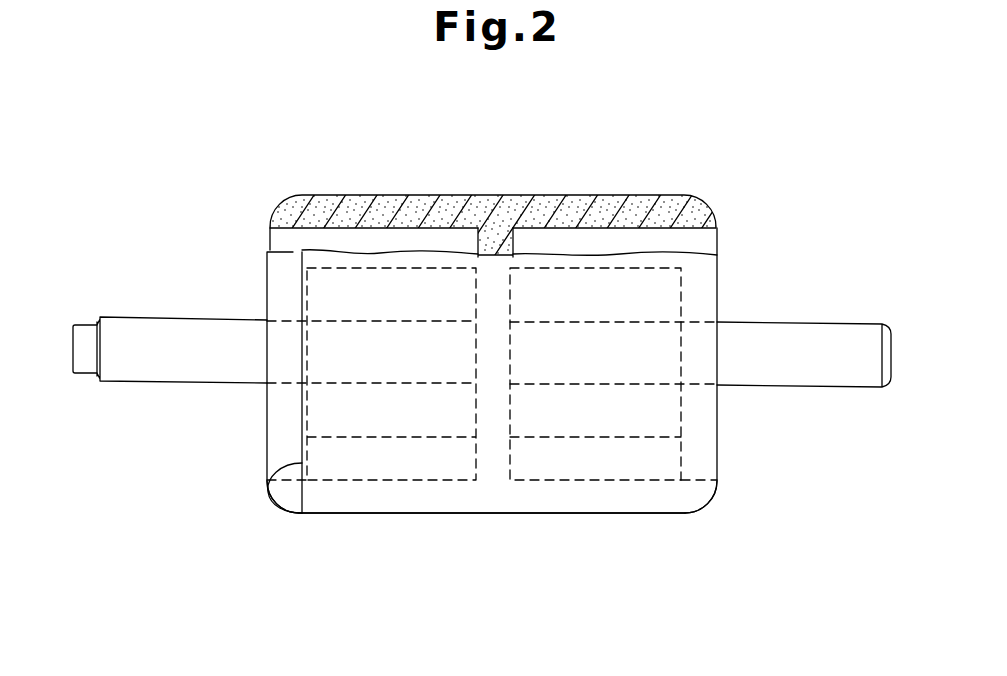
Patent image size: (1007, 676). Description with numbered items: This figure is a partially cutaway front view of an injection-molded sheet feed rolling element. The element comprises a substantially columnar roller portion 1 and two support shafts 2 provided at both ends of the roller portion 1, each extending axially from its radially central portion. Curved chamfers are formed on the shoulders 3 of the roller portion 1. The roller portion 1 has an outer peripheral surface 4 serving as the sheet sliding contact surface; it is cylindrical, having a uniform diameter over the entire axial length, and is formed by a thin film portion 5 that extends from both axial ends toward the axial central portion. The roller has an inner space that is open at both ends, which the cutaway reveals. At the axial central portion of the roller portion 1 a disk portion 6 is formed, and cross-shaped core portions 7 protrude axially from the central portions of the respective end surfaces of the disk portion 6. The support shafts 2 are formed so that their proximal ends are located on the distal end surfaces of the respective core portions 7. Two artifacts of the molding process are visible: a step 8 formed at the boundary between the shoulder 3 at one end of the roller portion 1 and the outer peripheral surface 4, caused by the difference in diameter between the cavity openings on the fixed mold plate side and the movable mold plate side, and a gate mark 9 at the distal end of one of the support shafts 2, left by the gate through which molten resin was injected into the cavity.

The roller portion 1 is at (560, 492).
The support shafts 2 is at (167, 368).
The shoulders 3 is at (276, 492).
The outer peripheral surface 4 is at (480, 513).
The thin film portion 5 is at (430, 200).
The disk portion 6 is at (496, 243).
The core portions 7 is at (368, 276).
The step 8 is at (297, 465).
The gate mark 9 is at (85, 367).